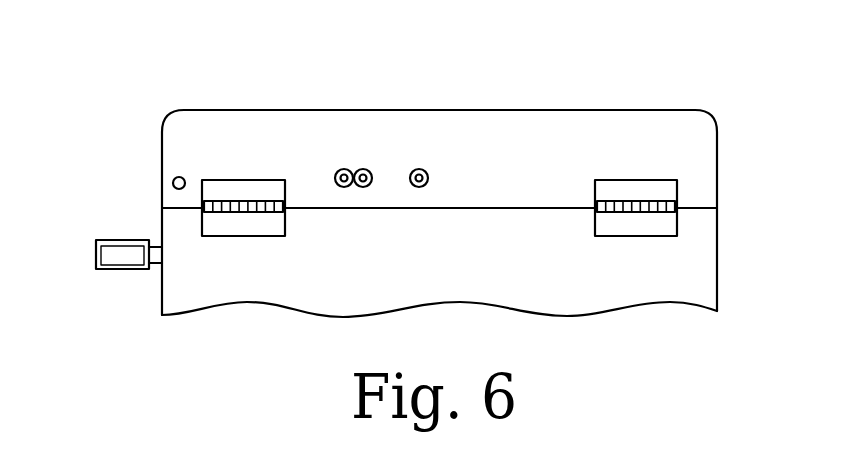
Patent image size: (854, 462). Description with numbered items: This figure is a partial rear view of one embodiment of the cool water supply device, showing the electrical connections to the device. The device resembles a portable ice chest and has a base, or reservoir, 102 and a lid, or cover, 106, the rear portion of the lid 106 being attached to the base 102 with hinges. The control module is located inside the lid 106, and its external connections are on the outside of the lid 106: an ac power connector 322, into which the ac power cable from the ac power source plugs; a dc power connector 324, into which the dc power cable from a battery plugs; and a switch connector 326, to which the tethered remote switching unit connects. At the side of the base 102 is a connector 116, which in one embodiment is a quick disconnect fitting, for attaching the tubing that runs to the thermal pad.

The base 102 is at (162, 300).
The lid 106 is at (328, 110).
The connector 116 is at (118, 240).
The ac power connector 322 is at (370, 172).
The dc power connector 324 is at (429, 180).
The switch connector 326 is at (182, 177).